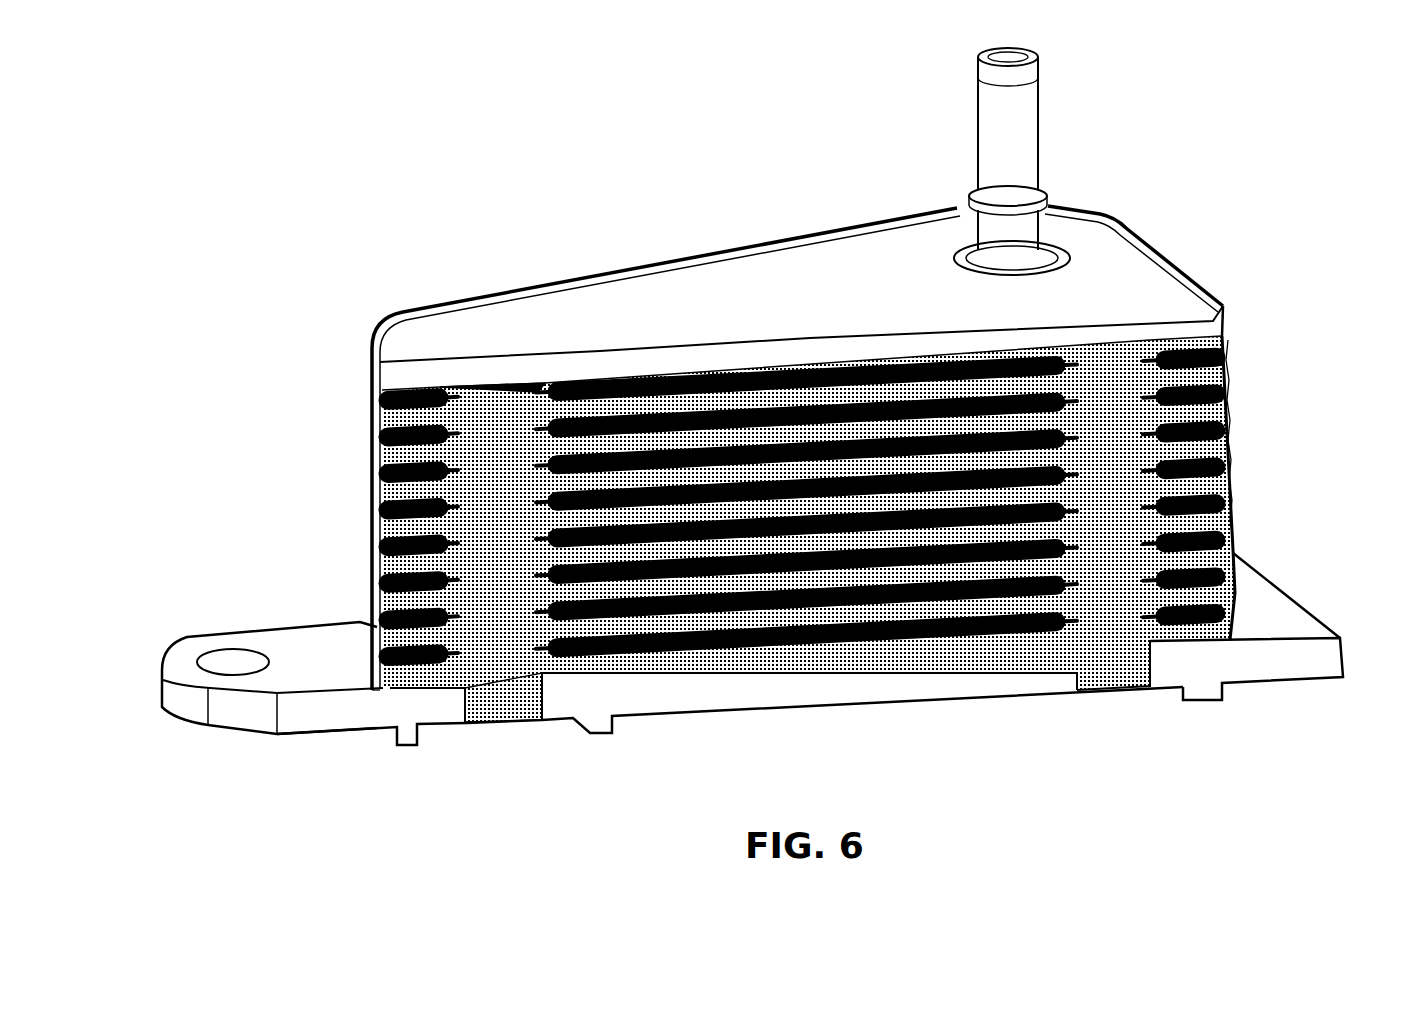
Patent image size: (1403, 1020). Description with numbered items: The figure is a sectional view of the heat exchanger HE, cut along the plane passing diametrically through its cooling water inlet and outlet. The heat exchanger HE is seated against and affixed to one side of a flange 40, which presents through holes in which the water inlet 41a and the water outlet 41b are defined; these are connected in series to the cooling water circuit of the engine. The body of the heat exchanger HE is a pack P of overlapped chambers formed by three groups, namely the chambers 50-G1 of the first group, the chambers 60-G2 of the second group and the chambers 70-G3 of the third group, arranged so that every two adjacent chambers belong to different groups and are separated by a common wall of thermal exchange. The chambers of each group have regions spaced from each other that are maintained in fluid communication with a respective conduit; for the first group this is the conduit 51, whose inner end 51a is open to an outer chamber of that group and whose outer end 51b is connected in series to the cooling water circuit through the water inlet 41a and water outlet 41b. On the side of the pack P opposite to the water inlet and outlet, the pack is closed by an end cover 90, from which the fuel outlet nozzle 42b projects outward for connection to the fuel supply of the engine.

The flange 40 is at (306, 615).
The water inlet 41a is at (1098, 677).
The water outlet 41b is at (530, 696).
The fuel outlet nozzle 42b is at (1048, 106).
The chambers of the first group 50-G1 is at (690, 620).
The conduit 51 is at (500, 540).
The inner end of conduit 51a is at (493, 423).
The outer end of conduit 51b is at (500, 660).
The chambers of the second group 60-G2 is at (867, 373).
The chambers of the third group 70-G3 is at (855, 630).
The end cover 90 is at (903, 262).
The heat exchanger HE is at (350, 313).
The pack of chambers P is at (1250, 442).